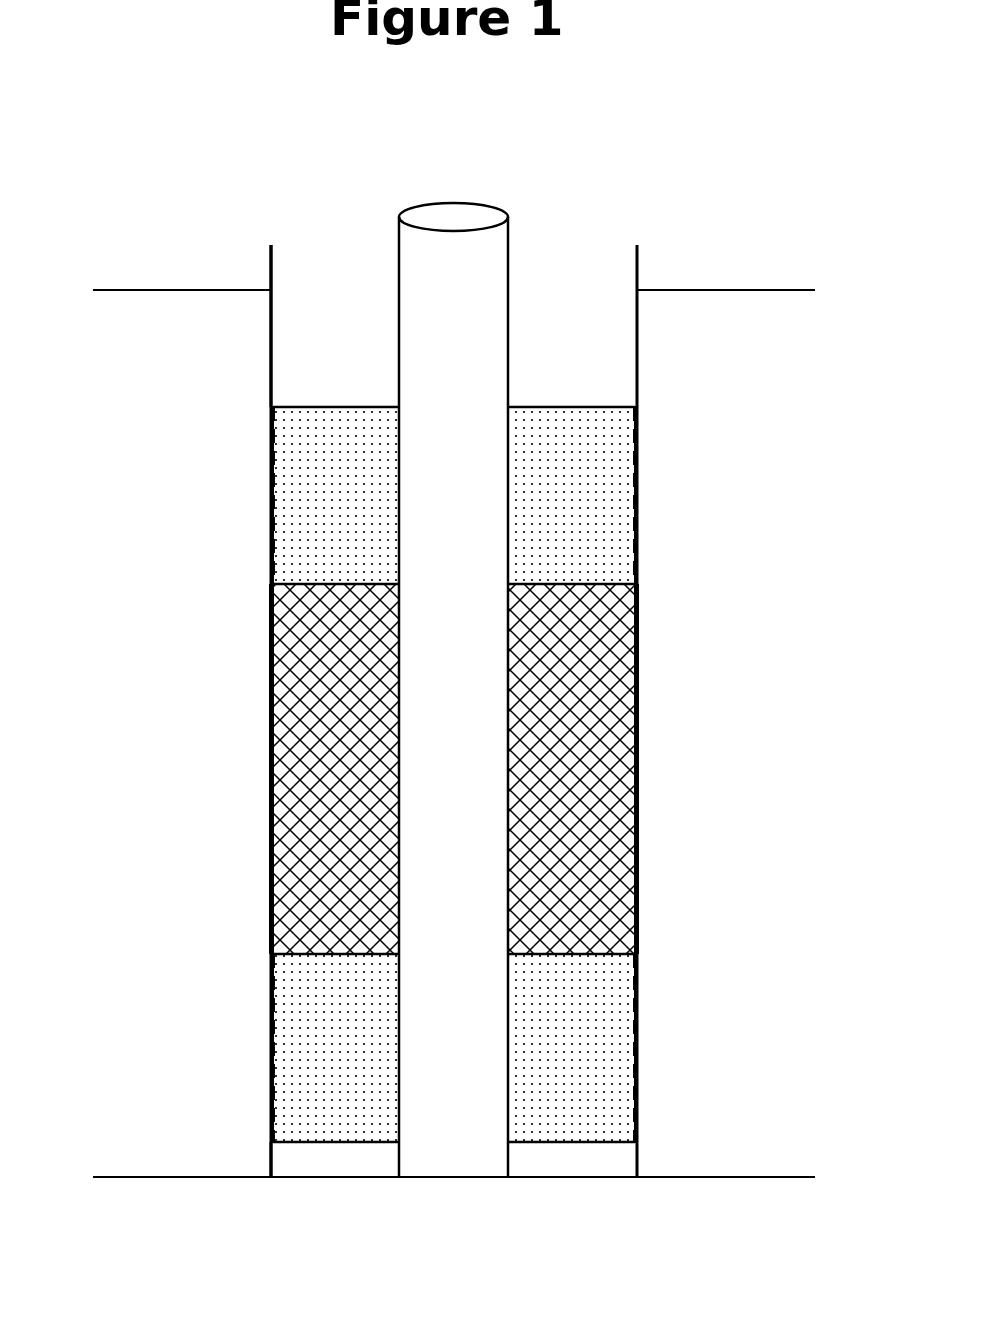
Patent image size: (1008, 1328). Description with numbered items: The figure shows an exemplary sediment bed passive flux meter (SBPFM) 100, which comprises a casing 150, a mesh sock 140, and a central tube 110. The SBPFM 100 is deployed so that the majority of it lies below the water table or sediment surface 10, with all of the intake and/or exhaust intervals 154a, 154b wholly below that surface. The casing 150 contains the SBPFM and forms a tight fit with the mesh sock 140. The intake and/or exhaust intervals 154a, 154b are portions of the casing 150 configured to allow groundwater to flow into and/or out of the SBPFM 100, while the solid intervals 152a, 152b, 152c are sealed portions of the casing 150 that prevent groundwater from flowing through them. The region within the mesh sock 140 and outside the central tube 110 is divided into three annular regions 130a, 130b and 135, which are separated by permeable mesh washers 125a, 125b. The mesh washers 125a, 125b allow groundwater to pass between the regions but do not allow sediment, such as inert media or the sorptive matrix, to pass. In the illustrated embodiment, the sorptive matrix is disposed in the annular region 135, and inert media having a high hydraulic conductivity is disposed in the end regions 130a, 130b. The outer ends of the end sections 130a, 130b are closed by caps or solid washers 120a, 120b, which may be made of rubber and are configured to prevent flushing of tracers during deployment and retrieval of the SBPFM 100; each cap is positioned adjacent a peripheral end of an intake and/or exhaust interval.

The water table or sediment surface 10 is at (740, 290).
The sediment bed passive flux meter 100 is at (525, 168).
The central tube 110 is at (508, 258).
The cap or solid washer 120a is at (533, 407).
The cap or solid washer 120b is at (578, 1142).
The permeable mesh washer 125a is at (590, 583).
The permeable mesh washer 125b is at (590, 952).
The annular region 130a is at (607, 472).
The annular region 130b is at (605, 1070).
The annular region 135 is at (605, 782).
The mesh sock 140 is at (637, 692).
The casing 150 is at (271, 245).
The solid interval 152a is at (271, 373).
The solid interval 152b is at (271, 710).
The solid interval 152c is at (271, 1158).
The intake and/or exhaust interval 154a is at (271, 476).
The intake and/or exhaust interval 154b is at (271, 1050).